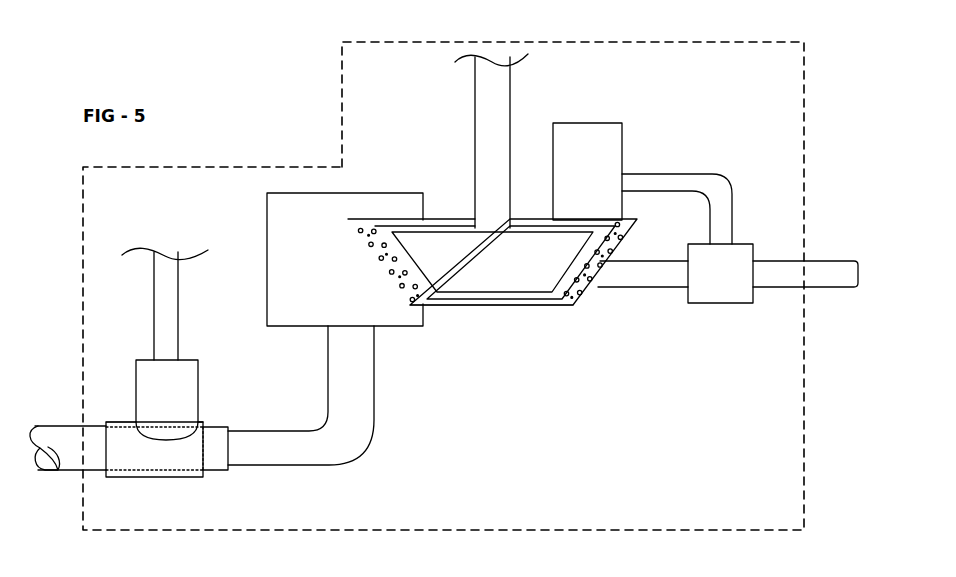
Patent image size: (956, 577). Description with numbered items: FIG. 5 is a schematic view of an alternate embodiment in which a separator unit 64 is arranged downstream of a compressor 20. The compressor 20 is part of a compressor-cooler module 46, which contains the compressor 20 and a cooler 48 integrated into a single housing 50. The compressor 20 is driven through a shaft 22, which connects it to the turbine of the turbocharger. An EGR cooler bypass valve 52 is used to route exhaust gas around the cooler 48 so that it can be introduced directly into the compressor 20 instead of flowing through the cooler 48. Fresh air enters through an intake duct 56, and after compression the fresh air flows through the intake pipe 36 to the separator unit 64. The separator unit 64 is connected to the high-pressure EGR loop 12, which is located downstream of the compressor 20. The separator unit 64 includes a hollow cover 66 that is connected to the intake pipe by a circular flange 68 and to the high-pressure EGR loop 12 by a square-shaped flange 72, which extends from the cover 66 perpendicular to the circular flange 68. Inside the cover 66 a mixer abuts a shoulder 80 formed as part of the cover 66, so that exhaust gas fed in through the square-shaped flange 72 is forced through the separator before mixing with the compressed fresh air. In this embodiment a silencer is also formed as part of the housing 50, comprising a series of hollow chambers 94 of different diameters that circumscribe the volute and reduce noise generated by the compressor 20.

The high-pressure EGR loop 12 is at (216, 296).
The compressor 20 is at (476, 277).
The shaft 22 is at (490, 93).
The intake pipe 36 is at (352, 428).
The compressor-cooler module 46 is at (804, 122).
The cooler 48 is at (595, 128).
The housing 50 is at (533, 304).
The EGR cooler bypass valve 52 is at (723, 292).
The intake duct 56 is at (838, 280).
The separator unit 64 is at (218, 380).
The cover 66 is at (125, 478).
The circular flange 68 is at (232, 465).
The square-shaped flange 72 is at (148, 360).
The shoulder 80 is at (205, 423).
The chambers 94 is at (365, 224).